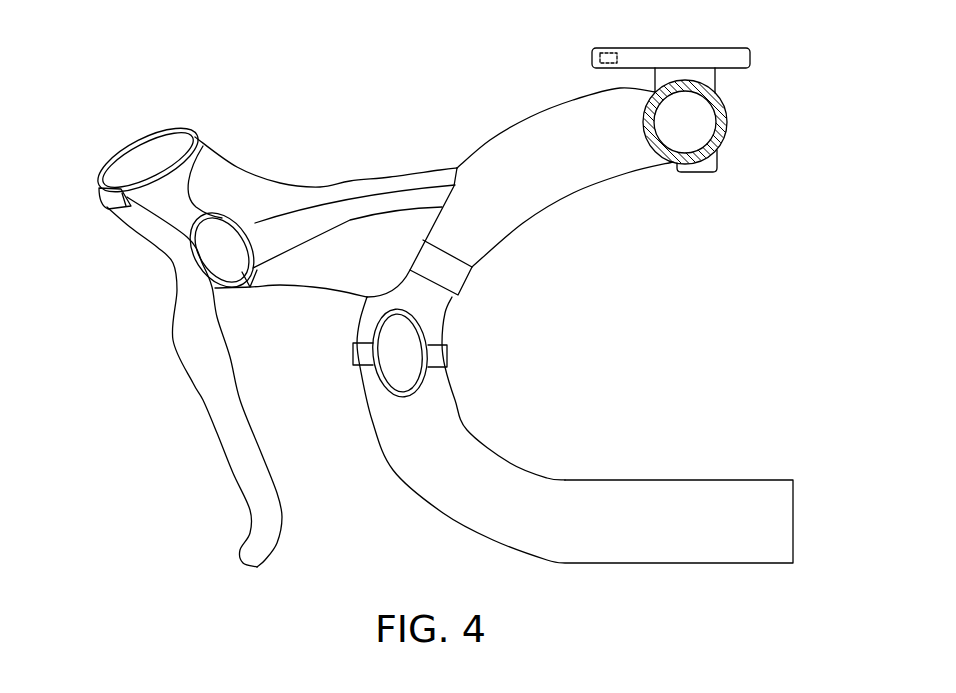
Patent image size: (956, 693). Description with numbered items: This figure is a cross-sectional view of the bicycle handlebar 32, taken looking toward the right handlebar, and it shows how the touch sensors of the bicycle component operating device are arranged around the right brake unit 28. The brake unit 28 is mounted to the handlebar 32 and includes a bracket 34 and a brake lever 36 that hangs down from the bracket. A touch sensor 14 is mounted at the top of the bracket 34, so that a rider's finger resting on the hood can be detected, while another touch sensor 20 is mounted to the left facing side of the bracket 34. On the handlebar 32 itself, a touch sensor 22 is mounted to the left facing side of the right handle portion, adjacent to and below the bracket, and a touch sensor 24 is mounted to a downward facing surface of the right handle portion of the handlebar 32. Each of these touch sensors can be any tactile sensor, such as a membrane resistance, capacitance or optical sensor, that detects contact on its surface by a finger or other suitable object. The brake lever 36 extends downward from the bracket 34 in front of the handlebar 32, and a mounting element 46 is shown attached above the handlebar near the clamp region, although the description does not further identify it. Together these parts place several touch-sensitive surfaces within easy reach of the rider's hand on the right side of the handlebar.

The touch sensor 14 is at (148, 160).
The touch sensor 20 is at (230, 248).
The touch sensor 22 is at (403, 368).
The touch sensor 24 is at (703, 170).
The brake unit 28 is at (116, 274).
The handlebar 32 is at (515, 126).
The bracket 34 is at (243, 168).
The brake lever 36 is at (212, 417).
The computer mount 46 is at (637, 46).